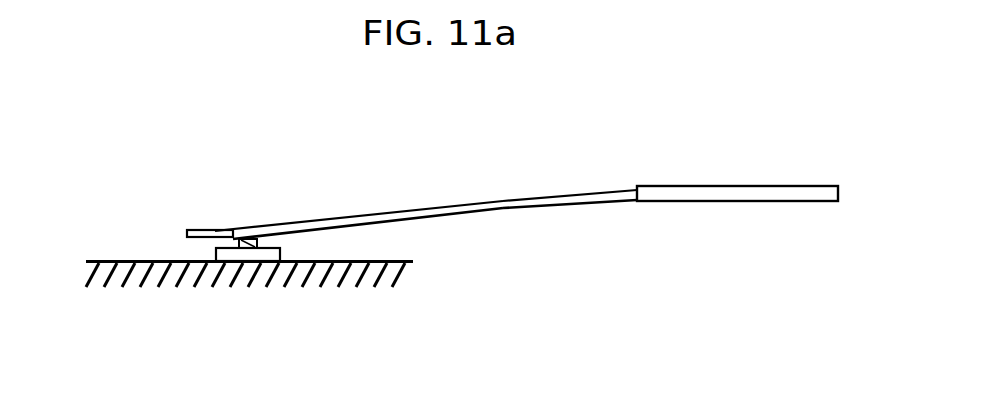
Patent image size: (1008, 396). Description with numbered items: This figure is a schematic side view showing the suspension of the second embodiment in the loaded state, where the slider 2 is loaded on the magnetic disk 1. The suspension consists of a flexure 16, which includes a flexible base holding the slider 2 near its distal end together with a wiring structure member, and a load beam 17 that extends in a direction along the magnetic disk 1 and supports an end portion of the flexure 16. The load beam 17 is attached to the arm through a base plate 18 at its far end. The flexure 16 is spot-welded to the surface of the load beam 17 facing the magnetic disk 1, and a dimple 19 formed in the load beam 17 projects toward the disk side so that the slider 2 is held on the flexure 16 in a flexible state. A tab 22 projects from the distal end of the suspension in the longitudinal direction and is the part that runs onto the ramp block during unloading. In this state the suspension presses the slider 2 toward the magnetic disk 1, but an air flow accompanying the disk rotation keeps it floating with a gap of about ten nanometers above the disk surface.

The magnetic disk 1 is at (302, 273).
The slider 2 is at (237, 255).
The flexure 16 is at (293, 234).
The load beam 17 is at (588, 202).
The base plate 18 is at (772, 192).
The dimple 19 is at (234, 234).
The tab 22 is at (190, 231).